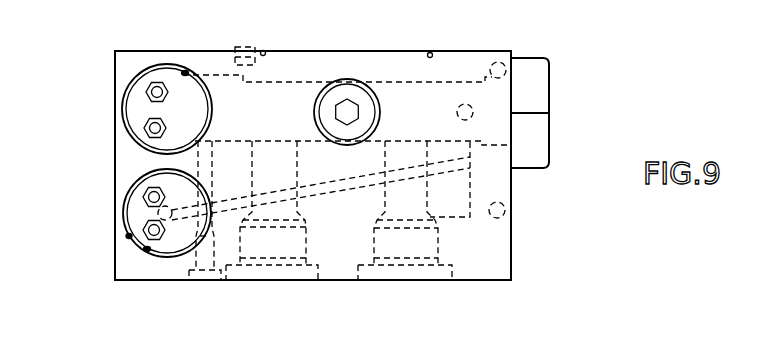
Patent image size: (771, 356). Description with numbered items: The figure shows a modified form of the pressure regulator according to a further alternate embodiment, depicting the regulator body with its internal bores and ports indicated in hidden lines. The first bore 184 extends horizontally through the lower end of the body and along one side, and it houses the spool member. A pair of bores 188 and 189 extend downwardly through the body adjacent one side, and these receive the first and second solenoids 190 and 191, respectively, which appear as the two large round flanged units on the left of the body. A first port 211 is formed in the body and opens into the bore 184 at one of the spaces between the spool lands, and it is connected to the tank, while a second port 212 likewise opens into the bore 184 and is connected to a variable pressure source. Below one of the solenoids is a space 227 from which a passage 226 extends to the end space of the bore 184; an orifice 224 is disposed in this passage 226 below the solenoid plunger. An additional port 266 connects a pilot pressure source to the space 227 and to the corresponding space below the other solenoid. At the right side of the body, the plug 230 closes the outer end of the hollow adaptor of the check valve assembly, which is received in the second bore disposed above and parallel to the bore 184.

The first bore 184 is at (296, 84).
The bore 188 is at (186, 72).
The bore 189 is at (145, 248).
The first solenoid 190 is at (157, 63).
The second solenoid 191 is at (128, 236).
The first port 211 is at (265, 252).
The second port 212 is at (386, 270).
The orifice 224 is at (176, 226).
The passage 226 is at (221, 200).
The space 227 is at (137, 212).
The plug 230 is at (538, 73).
The additional port 266 is at (207, 262).